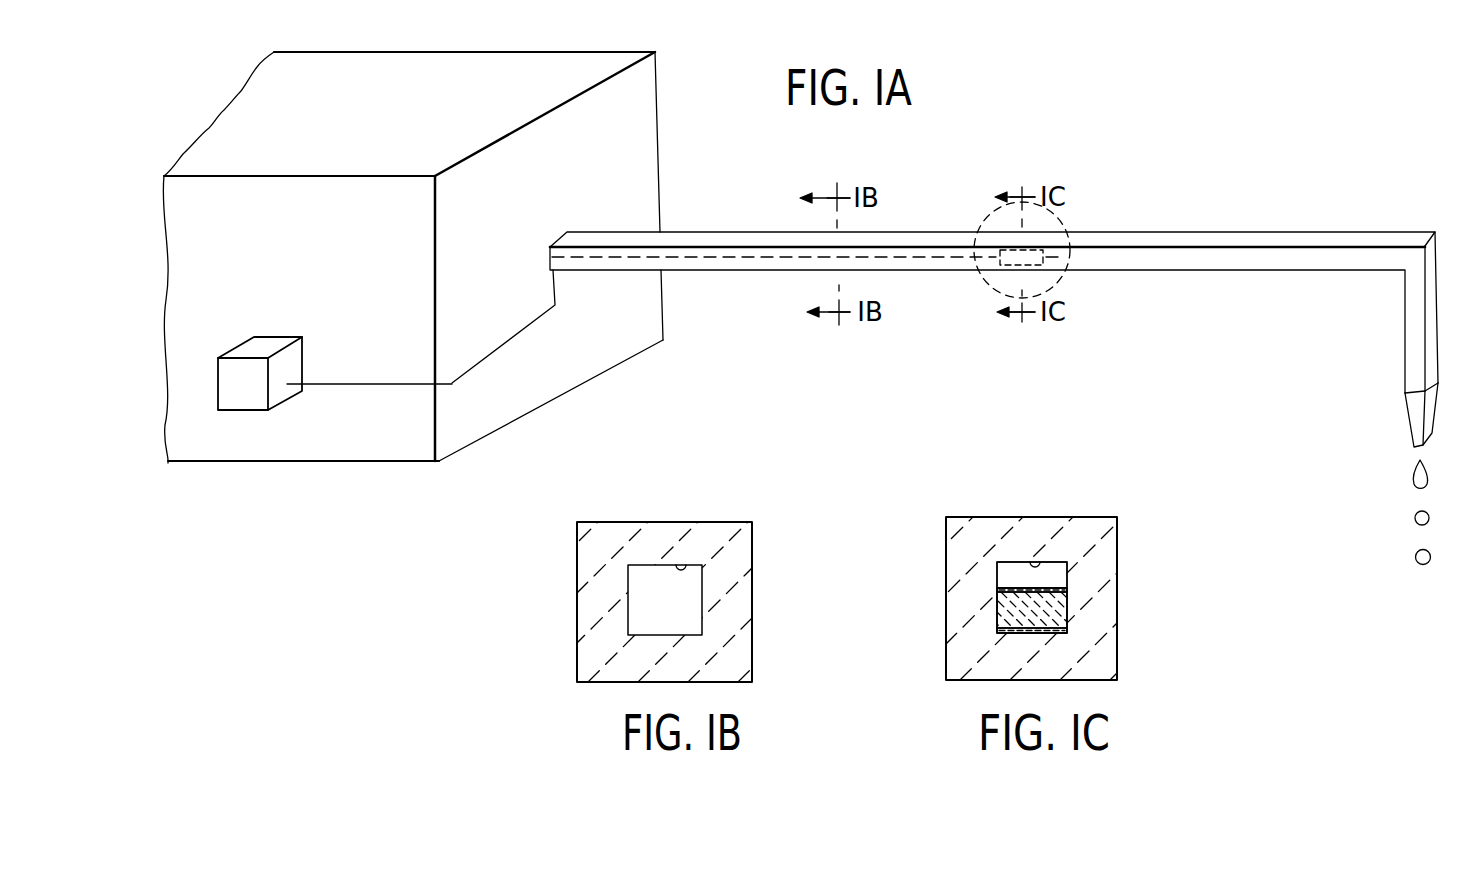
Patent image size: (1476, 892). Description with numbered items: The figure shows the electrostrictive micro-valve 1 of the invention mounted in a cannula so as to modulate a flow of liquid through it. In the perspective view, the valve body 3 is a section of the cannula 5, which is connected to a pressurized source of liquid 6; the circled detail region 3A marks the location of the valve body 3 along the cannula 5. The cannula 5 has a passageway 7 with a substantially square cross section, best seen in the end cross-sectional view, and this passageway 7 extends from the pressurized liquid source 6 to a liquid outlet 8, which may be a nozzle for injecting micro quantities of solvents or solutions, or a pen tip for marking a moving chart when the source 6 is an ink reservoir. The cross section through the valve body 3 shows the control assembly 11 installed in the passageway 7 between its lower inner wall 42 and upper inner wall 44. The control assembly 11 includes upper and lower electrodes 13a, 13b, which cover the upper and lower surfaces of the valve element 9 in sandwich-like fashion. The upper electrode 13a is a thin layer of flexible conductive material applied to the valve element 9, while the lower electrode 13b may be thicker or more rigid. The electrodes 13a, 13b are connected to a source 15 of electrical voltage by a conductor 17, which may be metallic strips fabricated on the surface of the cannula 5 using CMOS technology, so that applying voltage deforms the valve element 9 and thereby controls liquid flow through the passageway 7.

In FIG. 1A, the electrostrictive micro-valve 1 is at (1011, 223).
In FIG. 1A, the valve body 3 is at (1035, 244).
In FIG. 1C, the valve body 3 is at (980, 509).
In FIG. 1A, the detail region of sensor 3A is at (984, 214).
In FIG. 1A, the cannula 5 is at (1163, 251).
In FIG. 1B, the cannula 5 is at (634, 504).
In FIG. 1A, the pressurized source of liquid 6 is at (646, 134).
In FIG. 1B, the passageway 7 is at (665, 600).
In FIG. 1C, the passageway 7 is at (1057, 573).
In FIG. 1A, the liquid outlet 8 is at (1418, 417).
In FIG. 1C, the valve element 9 is at (1057, 607).
In FIG. 1C, the control assembly 11 is at (984, 612).
In FIG. 1C, the upper electrode 13a is at (1007, 588).
In FIG. 1C, the lower electrode 13b is at (1013, 633).
In FIG. 1A, the source of electrical voltage 15 is at (270, 345).
In FIG. 1A, the conductor 17 is at (487, 353).
In FIG. 1B, the lower inner wall 42 is at (643, 635).
In FIG. 1C, the lower inner wall 42 is at (1052, 635).
In FIG. 1B, the upper inner wall 44 is at (681, 568).
In FIG. 1C, the upper inner wall 44 is at (1035, 565).